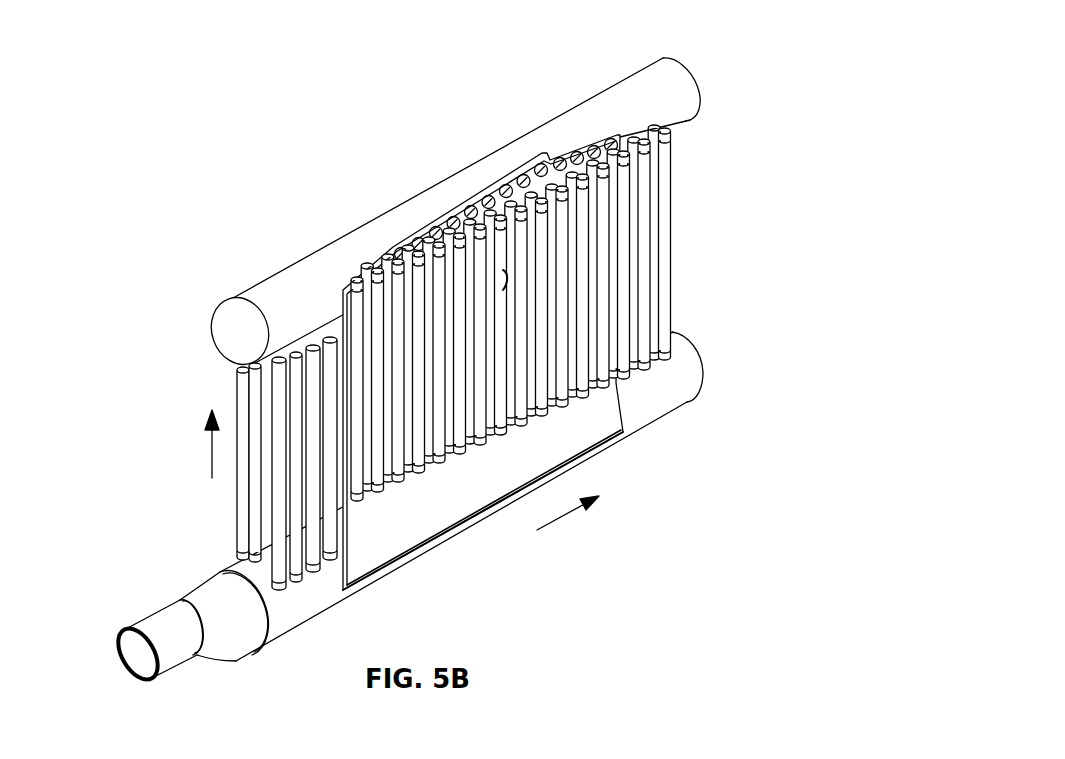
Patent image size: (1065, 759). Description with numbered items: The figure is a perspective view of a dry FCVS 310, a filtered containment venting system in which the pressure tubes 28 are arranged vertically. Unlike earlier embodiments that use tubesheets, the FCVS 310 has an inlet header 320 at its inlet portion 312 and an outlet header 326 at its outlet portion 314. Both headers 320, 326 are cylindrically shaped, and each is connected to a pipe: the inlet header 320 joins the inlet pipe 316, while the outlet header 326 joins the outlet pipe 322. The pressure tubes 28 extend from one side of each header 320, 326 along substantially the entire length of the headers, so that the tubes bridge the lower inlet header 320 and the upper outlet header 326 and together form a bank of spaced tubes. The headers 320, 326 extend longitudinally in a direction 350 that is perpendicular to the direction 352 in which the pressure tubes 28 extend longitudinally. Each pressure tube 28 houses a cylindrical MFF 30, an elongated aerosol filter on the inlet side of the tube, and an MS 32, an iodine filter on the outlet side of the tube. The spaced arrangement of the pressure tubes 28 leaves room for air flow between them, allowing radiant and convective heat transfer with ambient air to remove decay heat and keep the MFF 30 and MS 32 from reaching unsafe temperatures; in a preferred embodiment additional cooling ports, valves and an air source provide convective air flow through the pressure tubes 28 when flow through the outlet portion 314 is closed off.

The dry FCVS 310 is at (255, 160).
The inlet portion 312 is at (484, 548).
The outlet portion 314 is at (543, 103).
The inlet pipe 316 is at (140, 672).
The inlet header 320 is at (399, 521).
The outlet pipe 322 is at (485, 207).
The outlet header 326 is at (290, 282).
The pressure tubes 28 is at (485, 357).
The MFF 30 is at (507, 373).
The MS 32 is at (505, 247).
The direction 350 is at (562, 516).
The direction 352 is at (207, 438).